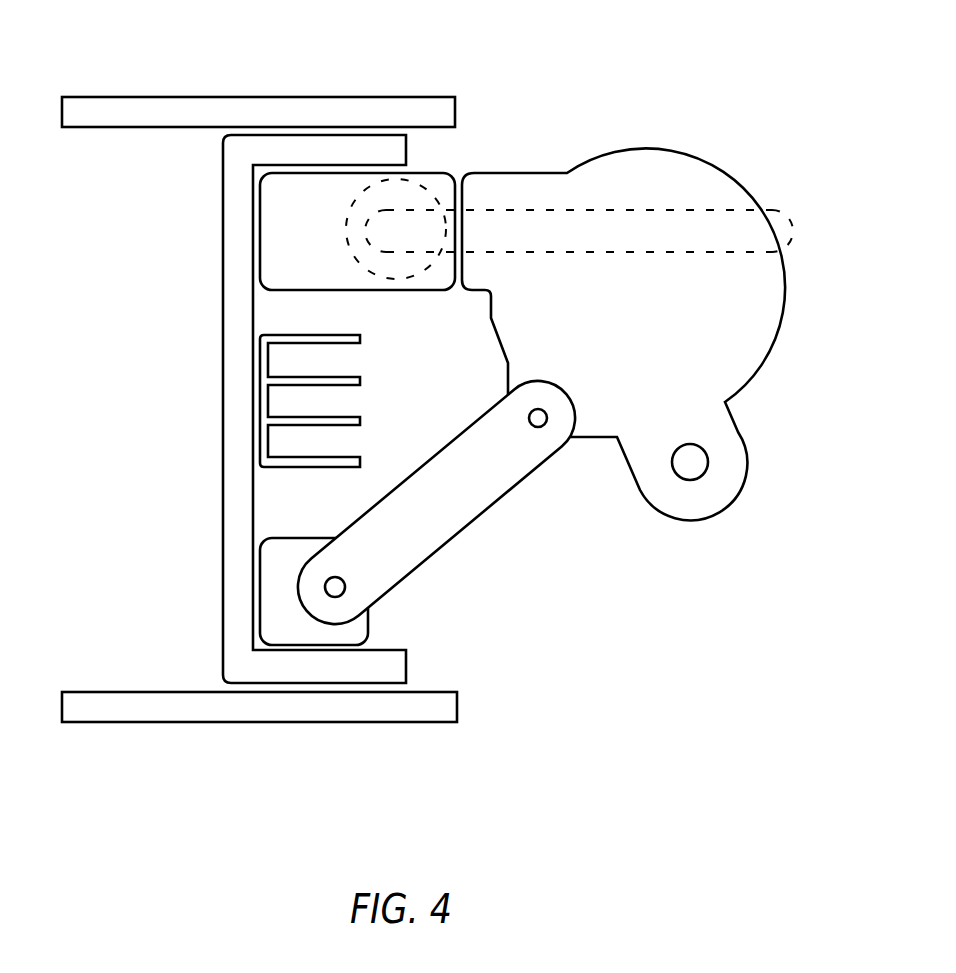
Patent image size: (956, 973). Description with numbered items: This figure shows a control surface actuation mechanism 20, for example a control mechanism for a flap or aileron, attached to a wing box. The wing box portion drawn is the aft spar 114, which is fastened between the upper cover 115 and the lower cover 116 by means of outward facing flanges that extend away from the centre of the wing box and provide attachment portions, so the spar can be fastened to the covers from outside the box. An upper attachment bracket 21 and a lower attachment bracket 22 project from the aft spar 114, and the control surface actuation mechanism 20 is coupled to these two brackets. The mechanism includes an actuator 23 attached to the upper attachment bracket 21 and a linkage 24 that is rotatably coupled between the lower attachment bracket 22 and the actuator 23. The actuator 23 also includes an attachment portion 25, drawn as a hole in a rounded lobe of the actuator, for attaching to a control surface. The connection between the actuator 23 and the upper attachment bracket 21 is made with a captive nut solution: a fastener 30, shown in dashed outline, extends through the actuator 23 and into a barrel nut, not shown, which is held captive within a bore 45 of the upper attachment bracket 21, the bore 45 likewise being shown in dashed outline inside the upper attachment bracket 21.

The control surface actuation mechanism 20 is at (536, 336).
The upper attachment bracket 21 is at (437, 187).
The lower attachment bracket 22 is at (357, 627).
The actuator 23 is at (732, 343).
The linkage 24 is at (457, 508).
The attachment portion 25 is at (690, 465).
The fastener 30 is at (478, 218).
The bore 45 is at (388, 190).
The aft spar 114 is at (235, 375).
The cover 115 is at (105, 112).
The cover 116 is at (98, 700).